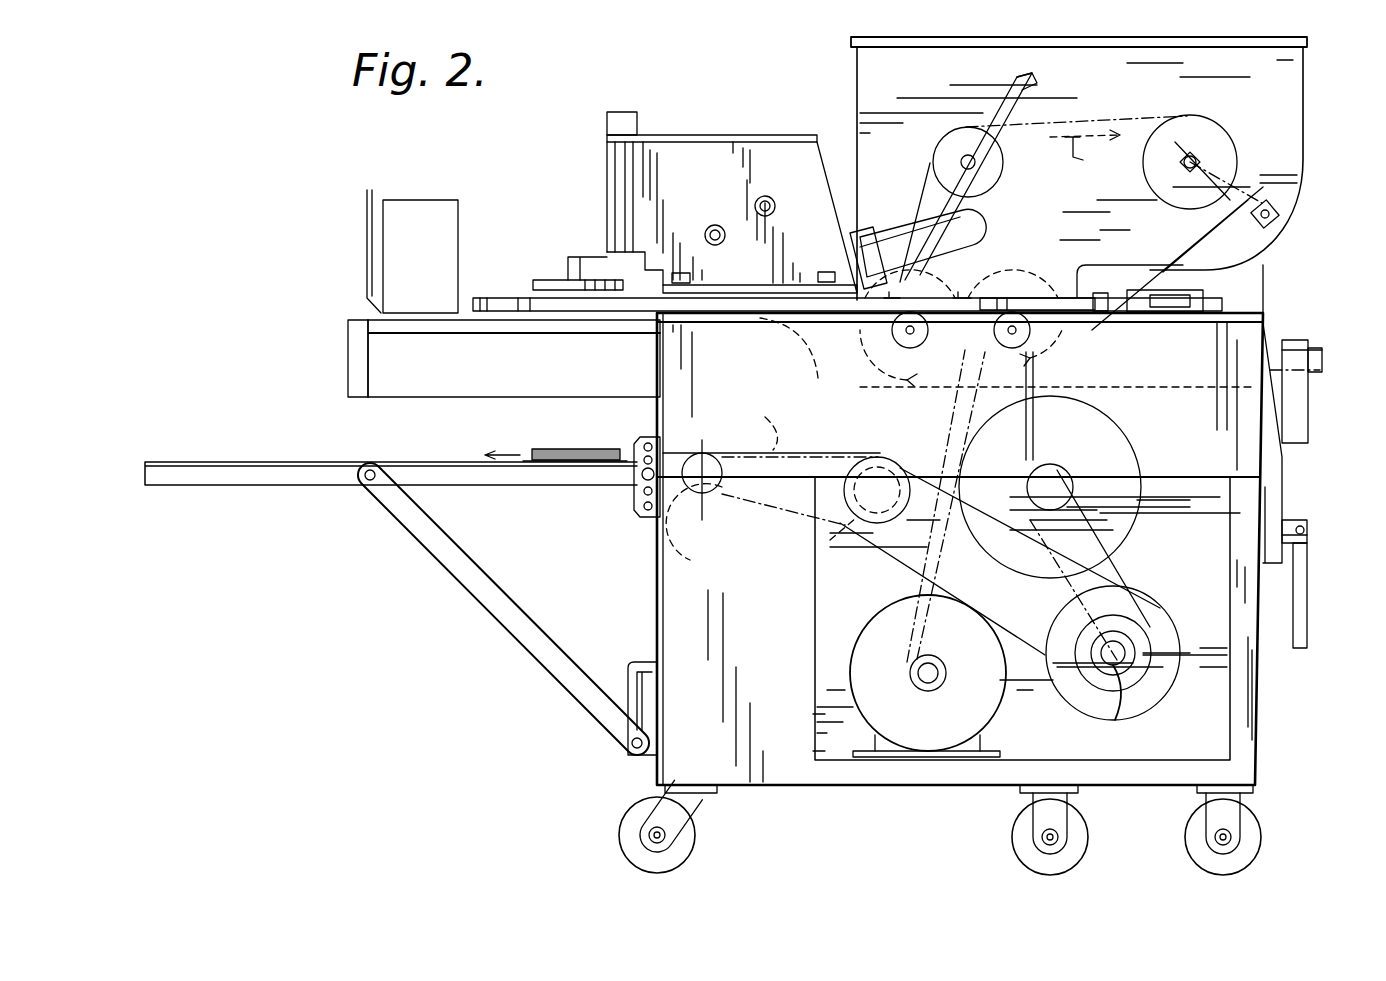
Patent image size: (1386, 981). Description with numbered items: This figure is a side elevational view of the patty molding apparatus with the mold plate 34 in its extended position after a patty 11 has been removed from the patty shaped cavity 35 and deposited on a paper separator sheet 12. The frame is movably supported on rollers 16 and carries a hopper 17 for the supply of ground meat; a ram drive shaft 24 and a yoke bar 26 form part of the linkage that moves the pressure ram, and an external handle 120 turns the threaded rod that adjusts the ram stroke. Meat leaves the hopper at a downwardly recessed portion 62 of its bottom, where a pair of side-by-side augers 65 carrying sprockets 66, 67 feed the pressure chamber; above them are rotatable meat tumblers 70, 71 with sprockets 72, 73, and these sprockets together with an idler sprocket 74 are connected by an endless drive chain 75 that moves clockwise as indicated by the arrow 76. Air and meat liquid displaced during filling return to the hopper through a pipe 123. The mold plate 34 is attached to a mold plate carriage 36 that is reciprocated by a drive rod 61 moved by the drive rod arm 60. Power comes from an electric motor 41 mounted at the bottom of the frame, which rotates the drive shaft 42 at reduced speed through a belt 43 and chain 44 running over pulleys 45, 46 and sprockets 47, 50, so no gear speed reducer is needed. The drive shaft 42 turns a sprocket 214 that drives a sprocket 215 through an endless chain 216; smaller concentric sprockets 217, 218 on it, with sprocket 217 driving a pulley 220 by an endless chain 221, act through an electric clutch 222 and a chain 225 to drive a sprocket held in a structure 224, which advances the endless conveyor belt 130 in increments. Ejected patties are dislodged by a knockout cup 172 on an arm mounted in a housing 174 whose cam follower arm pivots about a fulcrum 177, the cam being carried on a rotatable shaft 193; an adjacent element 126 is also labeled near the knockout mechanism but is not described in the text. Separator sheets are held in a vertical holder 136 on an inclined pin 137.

The flat patties 11 is at (570, 452).
The paper separator sheet 12 is at (622, 452).
The rollers 16 is at (690, 836).
The hopper 17 is at (977, 63).
The ram drive shaft 24 is at (1278, 340).
The yoke bar 26 is at (1293, 387).
The mold plate 34 is at (727, 305).
The patty shaped cavity 35 is at (617, 302).
The mold plate carriage 36 is at (930, 298).
The electric motor 41 is at (990, 702).
The drive shaft 42 is at (1120, 685).
The belt 43 is at (905, 585).
The chain 44 is at (1130, 556).
The pulley 45 is at (936, 658).
The pulley 46 is at (1135, 434).
The sprocket 47 is at (1052, 462).
The sprocket 50 is at (1170, 615).
The drive rod arm 60 is at (1162, 293).
The drive rod 61 is at (1050, 297).
The downwardly recessed portion 62 is at (1060, 338).
The augers 65 is at (880, 352).
The sprocket 66 is at (900, 366).
The sprocket 67 is at (1012, 365).
The meat tumbler 70 is at (1032, 77).
The meat tumbler 71 is at (1262, 200).
The sprocket 72 is at (995, 178).
The sprocket 73 is at (1208, 122).
The idler sprocket 74 is at (1090, 366).
The endless drive chain 75 is at (1108, 118).
The arrow 76 is at (1090, 158).
The external handle 120 is at (1300, 592).
The pipe 123 is at (985, 228).
The step 126 is at (580, 257).
The endless conveyor belt 130 is at (525, 478).
The vertical holder 136 is at (420, 256).
The inclined pin 137 is at (362, 237).
The knockout cup 172 is at (540, 280).
The housing 174 is at (715, 153).
The fulcrum 177 is at (712, 226).
The rotatable shaft 193 is at (763, 195).
The sprocket 214 is at (1160, 680).
The sprocket 215 is at (870, 455).
The endless chain 216 is at (950, 475).
The sprocket 217 is at (828, 545).
The sprocket 218 is at (835, 515).
The pulley 220 is at (702, 500).
The endless chain 221 is at (752, 427).
The electric clutch 222 is at (694, 531).
The structure 224 is at (645, 512).
The chain 225 is at (681, 450).